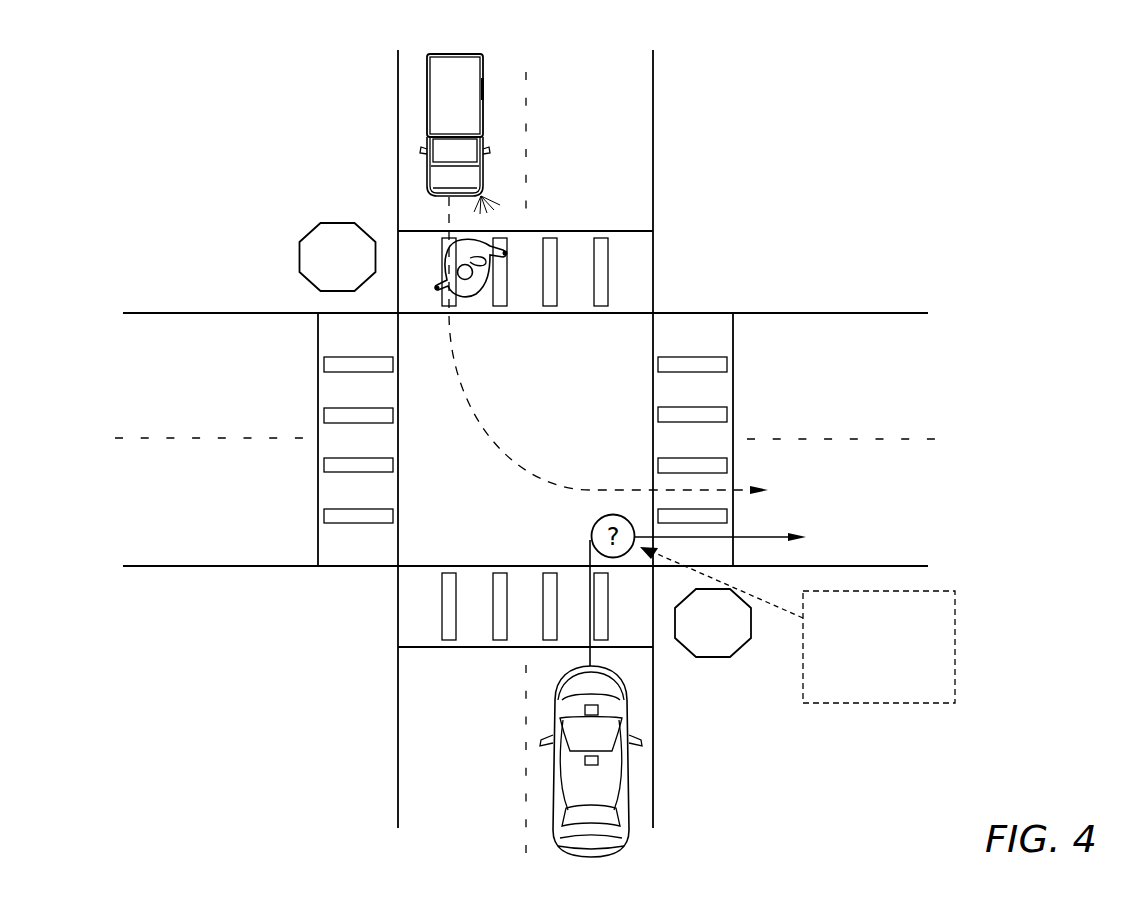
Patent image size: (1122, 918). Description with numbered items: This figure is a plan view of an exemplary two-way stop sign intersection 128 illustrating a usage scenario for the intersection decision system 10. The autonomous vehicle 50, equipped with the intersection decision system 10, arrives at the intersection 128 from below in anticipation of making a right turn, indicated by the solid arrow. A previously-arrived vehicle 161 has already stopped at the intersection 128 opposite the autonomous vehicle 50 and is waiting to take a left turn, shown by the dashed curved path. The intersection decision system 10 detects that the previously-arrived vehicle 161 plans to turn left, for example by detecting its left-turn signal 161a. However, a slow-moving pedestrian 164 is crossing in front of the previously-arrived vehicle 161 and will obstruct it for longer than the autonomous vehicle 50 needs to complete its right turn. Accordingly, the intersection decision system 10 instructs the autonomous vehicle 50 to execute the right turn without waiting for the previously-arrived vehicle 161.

The two-way stop sign intersection 128 is at (128, 112).
The previously-arrived vehicle 161 is at (469, 54).
The left-turn signal 161a is at (487, 193).
The slow-moving pedestrian 164 is at (487, 242).
The intersection decision system 10 is at (940, 591).
The autonomous vehicle 50 is at (626, 836).